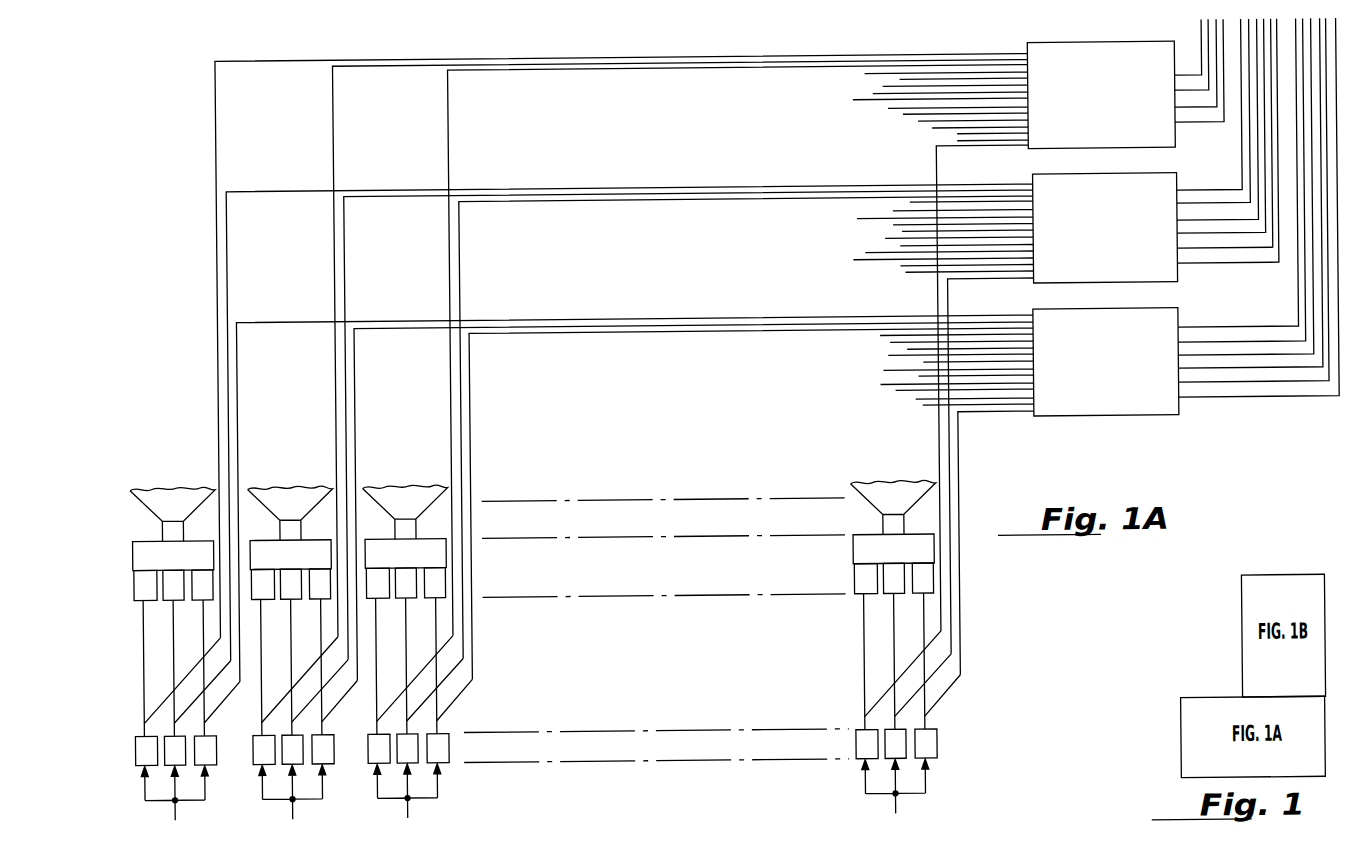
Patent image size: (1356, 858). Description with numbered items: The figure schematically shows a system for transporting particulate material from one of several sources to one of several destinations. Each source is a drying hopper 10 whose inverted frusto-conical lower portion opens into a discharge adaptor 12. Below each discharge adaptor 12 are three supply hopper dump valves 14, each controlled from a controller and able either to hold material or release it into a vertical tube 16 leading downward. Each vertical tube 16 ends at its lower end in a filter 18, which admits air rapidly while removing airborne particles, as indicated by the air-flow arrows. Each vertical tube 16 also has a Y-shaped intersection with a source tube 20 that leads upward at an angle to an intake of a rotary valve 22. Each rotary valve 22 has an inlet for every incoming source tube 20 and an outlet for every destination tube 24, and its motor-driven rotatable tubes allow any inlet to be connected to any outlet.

The hopper 10 is at (533, 493).
The discharge adaptor 12 is at (529, 540).
The supply hopper dump valve 14 is at (534, 598).
The vertical tube 16 is at (535, 665).
The filter 18 is at (536, 788).
The source tube 20 is at (235, 421).
The rotary valve 22 is at (1042, 194).
The destination tube 24 is at (1196, 82).